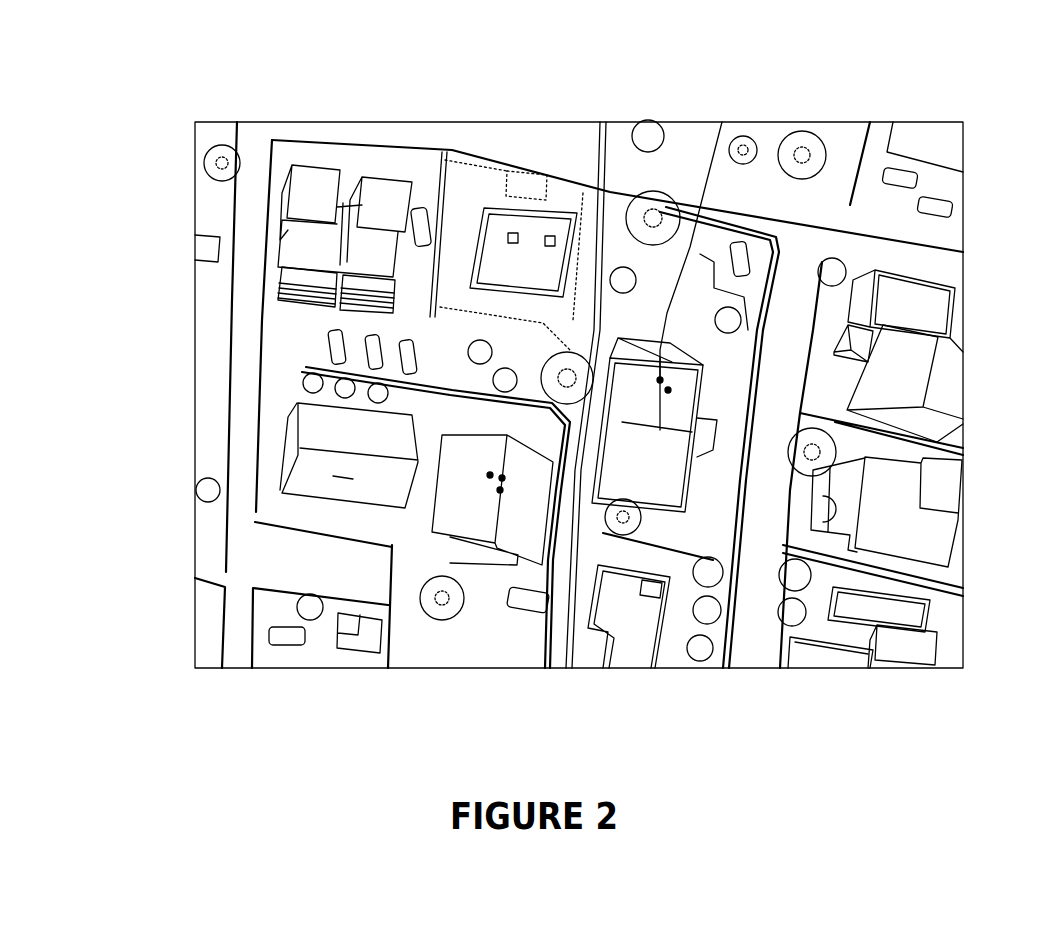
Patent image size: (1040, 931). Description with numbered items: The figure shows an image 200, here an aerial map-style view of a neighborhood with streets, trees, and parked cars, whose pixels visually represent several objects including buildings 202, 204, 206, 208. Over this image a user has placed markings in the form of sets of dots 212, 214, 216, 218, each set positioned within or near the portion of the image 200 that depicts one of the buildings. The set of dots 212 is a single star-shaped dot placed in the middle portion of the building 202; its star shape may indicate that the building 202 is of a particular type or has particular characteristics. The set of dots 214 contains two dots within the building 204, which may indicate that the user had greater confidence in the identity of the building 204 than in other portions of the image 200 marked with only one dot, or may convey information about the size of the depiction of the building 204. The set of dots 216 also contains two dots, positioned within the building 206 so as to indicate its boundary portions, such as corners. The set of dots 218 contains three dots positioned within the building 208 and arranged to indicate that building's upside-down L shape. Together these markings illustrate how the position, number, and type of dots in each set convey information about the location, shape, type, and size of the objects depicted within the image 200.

The image 200 is at (961, 76).
The building 202 is at (497, 203).
The building 204 is at (640, 380).
The building 206 is at (343, 477).
The building 208 is at (512, 527).
The set of dots 212 is at (527, 240).
The set of dots 214 is at (668, 390).
The set of dots 216 is at (283, 495).
The set of dots 218 is at (500, 490).